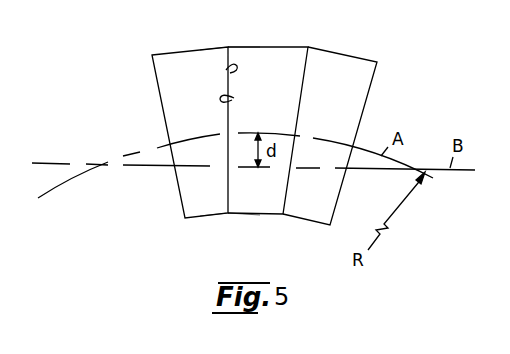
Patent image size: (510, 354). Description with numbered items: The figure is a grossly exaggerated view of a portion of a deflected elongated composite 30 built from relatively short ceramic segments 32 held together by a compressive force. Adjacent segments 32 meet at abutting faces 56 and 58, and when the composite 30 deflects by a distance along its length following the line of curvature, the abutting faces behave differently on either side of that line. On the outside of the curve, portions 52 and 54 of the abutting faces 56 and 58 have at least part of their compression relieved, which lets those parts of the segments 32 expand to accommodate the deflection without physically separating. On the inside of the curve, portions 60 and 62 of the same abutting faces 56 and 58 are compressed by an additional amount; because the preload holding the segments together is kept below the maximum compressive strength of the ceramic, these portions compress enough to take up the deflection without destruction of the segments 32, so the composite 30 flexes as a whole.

The elongated composite 30 is at (264, 126).
The segment 32 is at (178, 50).
The portion of abutting face on outside of line of curvature 52 is at (218, 53).
The portion of abutting face on outside of line of curvature 54 is at (236, 55).
The abutting face 56 is at (226, 70).
The abutting face 58 is at (232, 100).
The portion of abutting face on inside of line of curvature 60 is at (226, 209).
The portion of abutting face on inside of line of curvature 62 is at (242, 208).